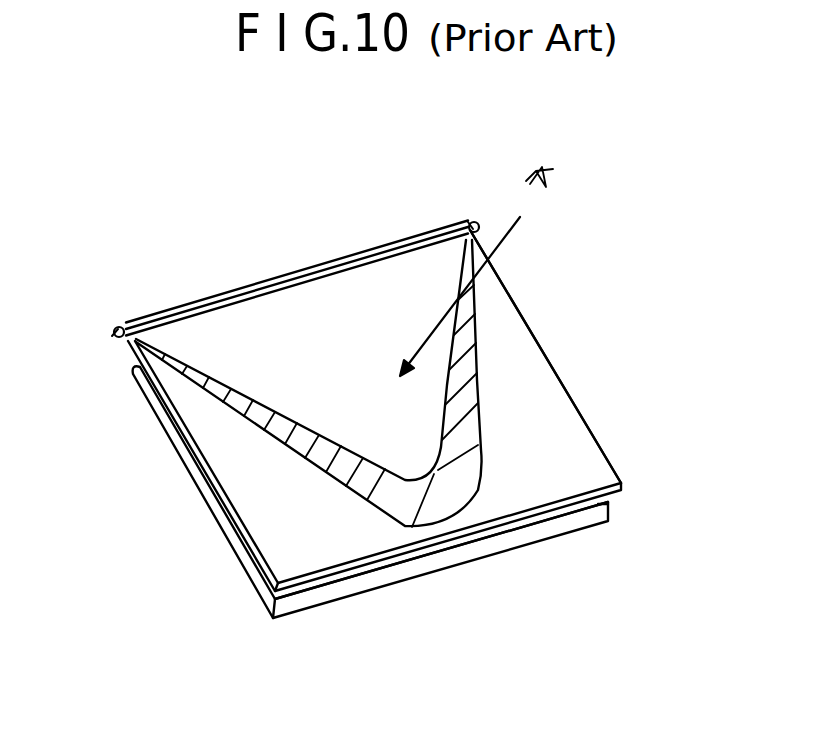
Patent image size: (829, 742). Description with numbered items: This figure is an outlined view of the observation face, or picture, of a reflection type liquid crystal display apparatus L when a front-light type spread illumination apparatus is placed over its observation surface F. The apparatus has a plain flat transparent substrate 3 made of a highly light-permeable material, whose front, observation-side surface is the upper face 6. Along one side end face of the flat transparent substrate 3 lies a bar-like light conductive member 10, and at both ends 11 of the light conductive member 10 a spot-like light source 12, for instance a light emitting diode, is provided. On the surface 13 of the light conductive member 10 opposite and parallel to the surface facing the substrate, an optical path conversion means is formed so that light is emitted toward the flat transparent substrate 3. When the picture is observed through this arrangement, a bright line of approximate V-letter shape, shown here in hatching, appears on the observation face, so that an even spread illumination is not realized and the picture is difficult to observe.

The flat transparent substrate 3 is at (530, 368).
The upper face 6 is at (217, 334).
The light conductive member 10 is at (272, 284).
The ends 11 is at (121, 330).
The spot-like light source 12 is at (106, 334).
The surface 13 is at (371, 246).
The observation surface F is at (577, 509).
The liquid crystal display apparatus L is at (470, 548).